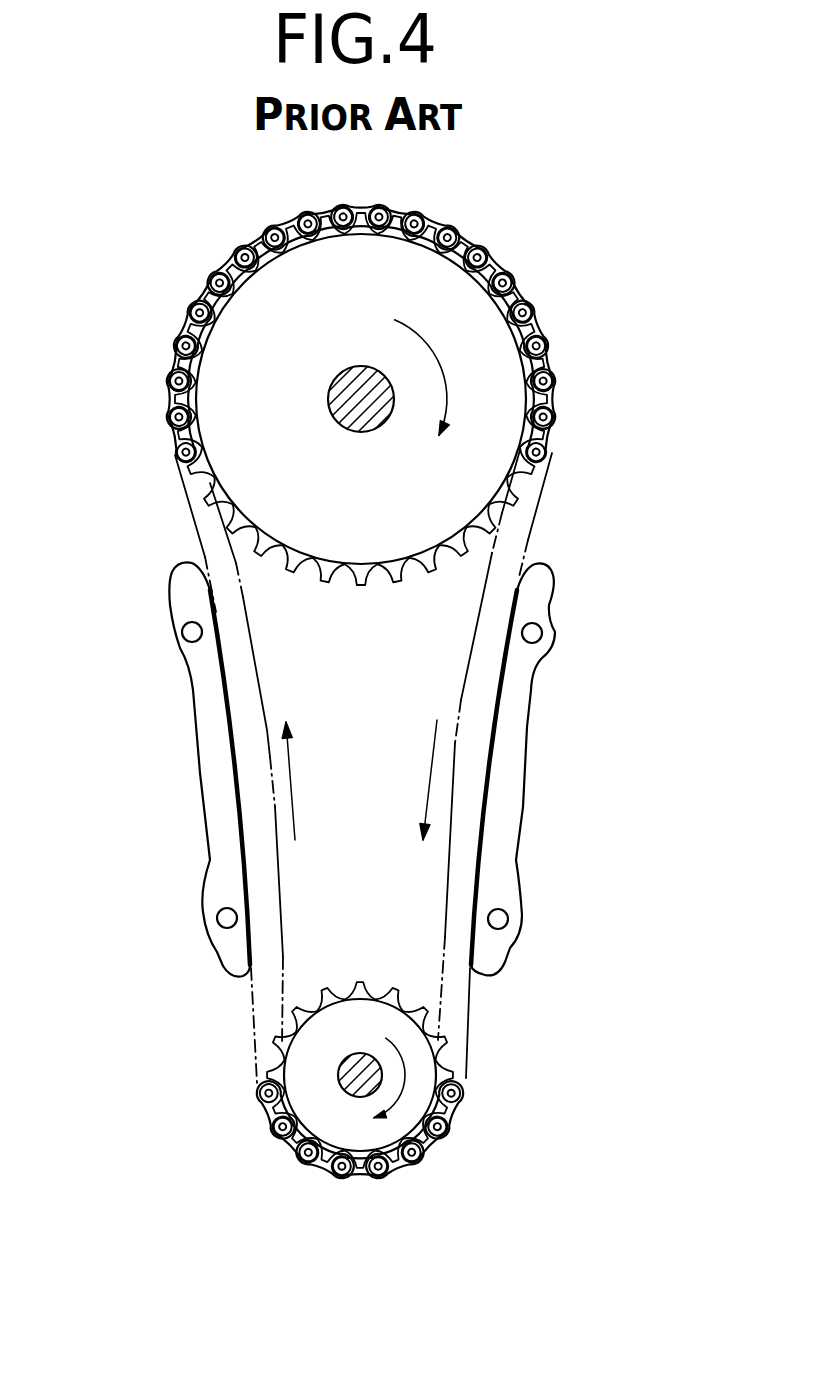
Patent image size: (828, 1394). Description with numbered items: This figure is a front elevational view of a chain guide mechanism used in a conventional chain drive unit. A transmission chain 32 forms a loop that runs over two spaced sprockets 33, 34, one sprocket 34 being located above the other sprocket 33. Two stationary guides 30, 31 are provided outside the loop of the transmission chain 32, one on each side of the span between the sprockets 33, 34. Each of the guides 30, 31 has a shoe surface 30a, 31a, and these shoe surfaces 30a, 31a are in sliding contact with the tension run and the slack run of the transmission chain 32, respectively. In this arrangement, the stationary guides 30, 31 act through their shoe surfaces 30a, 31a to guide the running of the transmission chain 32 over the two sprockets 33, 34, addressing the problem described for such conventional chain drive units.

The stationary guide 30 is at (508, 787).
The shoe surface 30a is at (482, 832).
The stationary guide 31 is at (218, 790).
The shoe surface 31a is at (230, 681).
The transmission chain 32 is at (528, 307).
The sprocket 33 is at (363, 1137).
The sprocket 34 is at (505, 390).